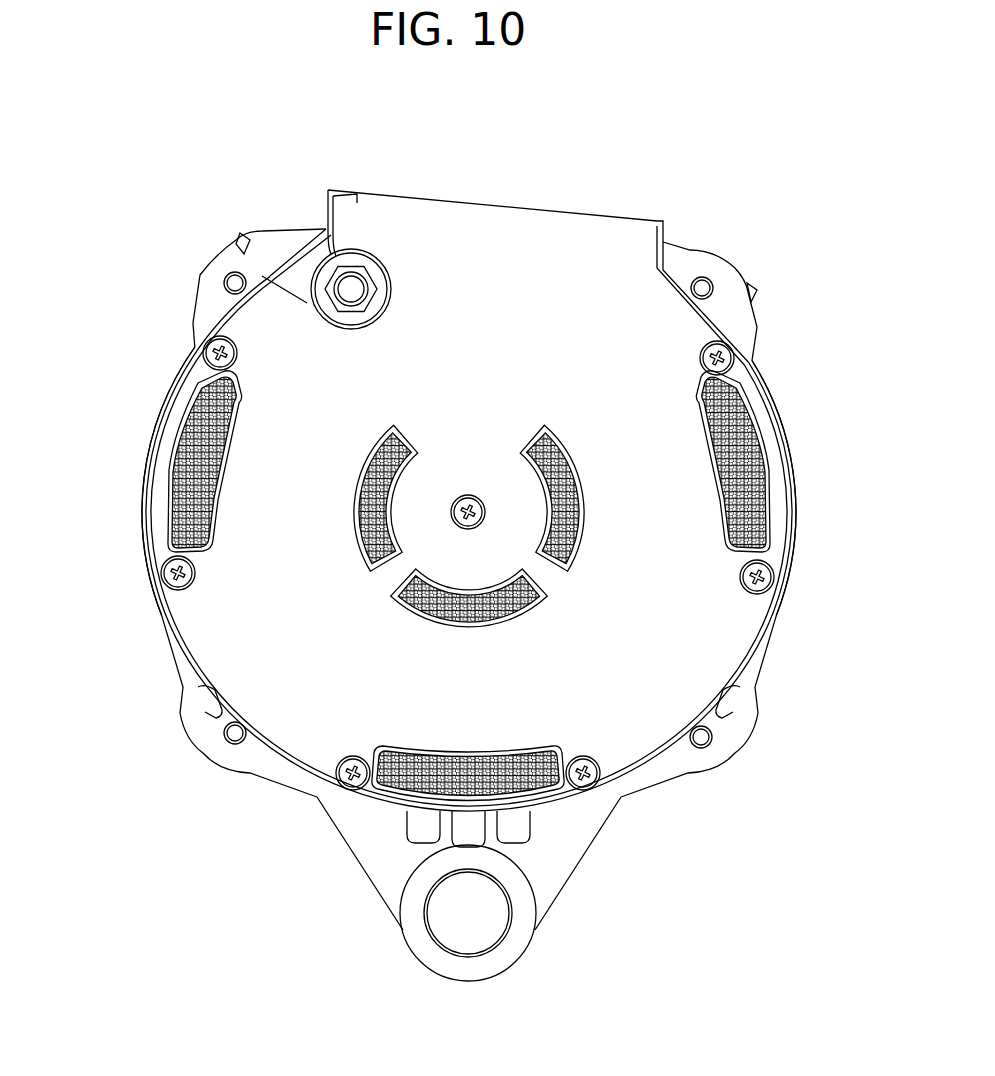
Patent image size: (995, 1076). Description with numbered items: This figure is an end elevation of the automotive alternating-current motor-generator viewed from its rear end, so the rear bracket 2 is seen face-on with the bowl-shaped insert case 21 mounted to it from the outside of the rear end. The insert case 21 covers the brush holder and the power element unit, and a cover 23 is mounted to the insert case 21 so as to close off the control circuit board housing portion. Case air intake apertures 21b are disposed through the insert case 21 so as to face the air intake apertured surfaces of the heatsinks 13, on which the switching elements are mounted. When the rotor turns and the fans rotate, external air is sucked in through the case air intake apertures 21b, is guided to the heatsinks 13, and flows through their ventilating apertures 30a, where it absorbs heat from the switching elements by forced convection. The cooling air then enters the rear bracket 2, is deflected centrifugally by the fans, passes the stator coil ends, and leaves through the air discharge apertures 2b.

The rear bracket 2 is at (755, 328).
The air discharge apertures 2b is at (517, 823).
The heatsinks 13 is at (210, 405).
The insert case 21 is at (323, 187).
The case air intake apertures 21b is at (183, 415).
The cover 23 is at (567, 257).
The ventilating apertures 30a is at (168, 508).